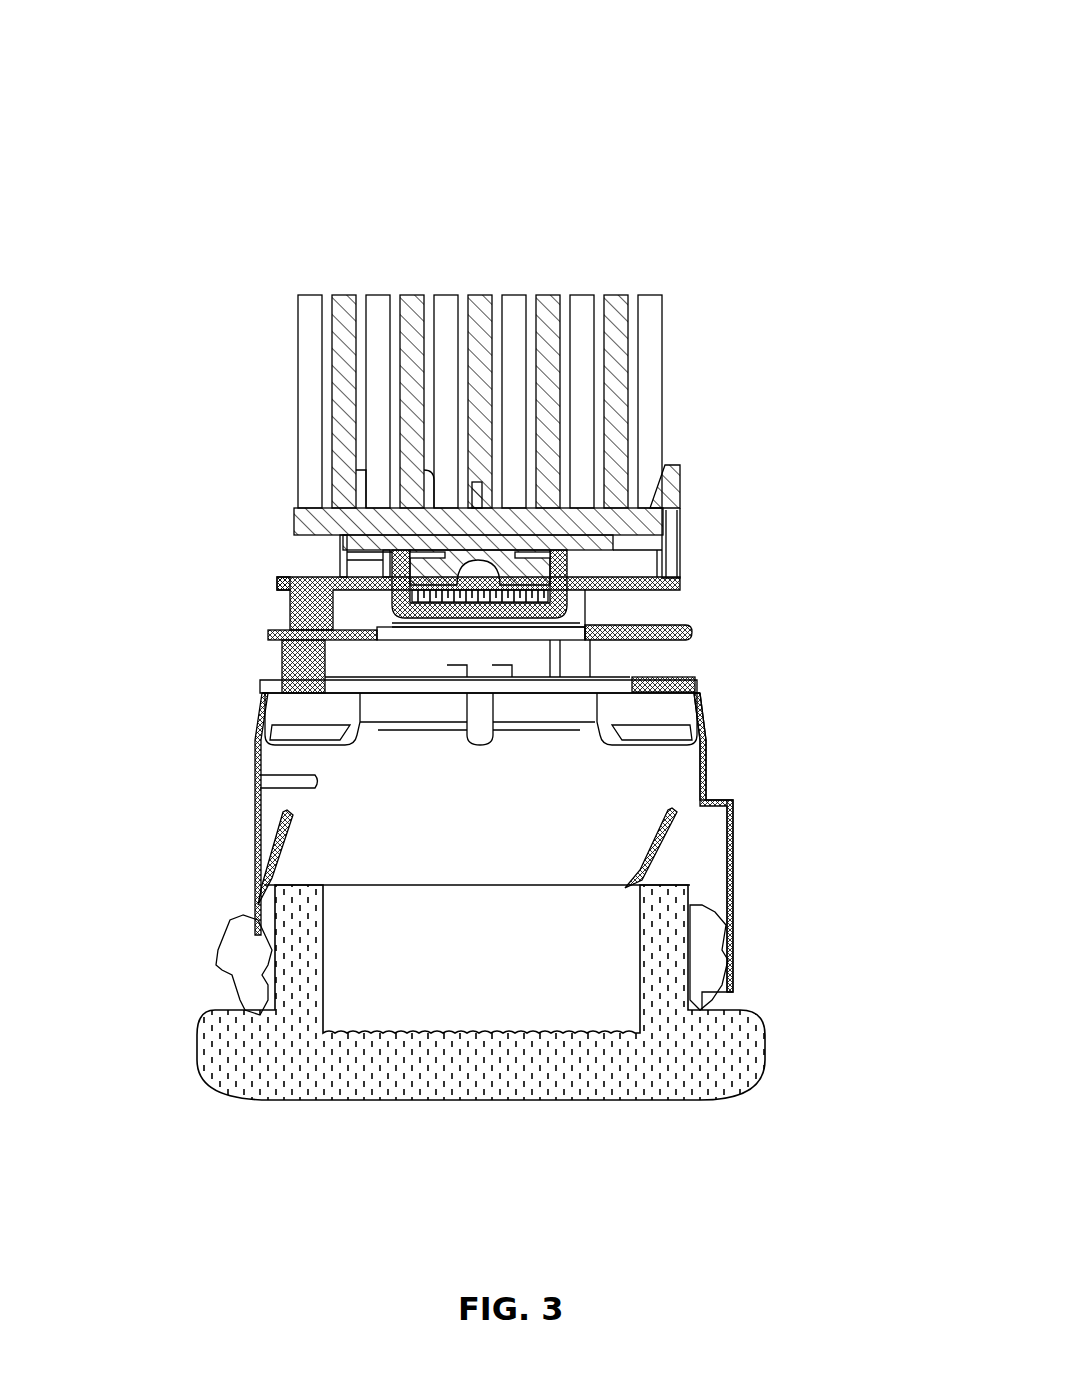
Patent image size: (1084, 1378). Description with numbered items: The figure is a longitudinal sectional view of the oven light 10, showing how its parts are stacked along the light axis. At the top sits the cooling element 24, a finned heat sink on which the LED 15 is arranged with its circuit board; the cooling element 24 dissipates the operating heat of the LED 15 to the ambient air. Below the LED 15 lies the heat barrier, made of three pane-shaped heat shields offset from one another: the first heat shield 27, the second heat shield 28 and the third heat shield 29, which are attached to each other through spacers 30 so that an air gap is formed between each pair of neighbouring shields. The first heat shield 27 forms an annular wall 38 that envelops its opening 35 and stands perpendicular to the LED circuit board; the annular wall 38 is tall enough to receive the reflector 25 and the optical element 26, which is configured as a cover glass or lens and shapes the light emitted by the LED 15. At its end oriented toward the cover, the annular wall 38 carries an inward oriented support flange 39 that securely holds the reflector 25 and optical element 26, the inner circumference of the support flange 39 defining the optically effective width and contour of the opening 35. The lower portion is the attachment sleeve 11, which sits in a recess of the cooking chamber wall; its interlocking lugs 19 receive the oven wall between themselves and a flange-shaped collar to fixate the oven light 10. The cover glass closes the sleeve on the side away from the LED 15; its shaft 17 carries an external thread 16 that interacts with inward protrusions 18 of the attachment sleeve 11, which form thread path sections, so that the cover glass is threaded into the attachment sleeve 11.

The oven light 10 is at (278, 170).
The cooling element 24 is at (593, 270).
The LED 15 is at (395, 540).
The annular wall 38 is at (322, 575).
The optical element 26 is at (383, 563).
The first heat shield 27 is at (680, 578).
The support flange 39 is at (283, 577).
The opening 35 is at (555, 520).
The reflector 25 is at (565, 603).
The second heat shield 28 is at (692, 633).
The spacers 30 is at (278, 607).
The third heat shield 29 is at (695, 682).
The attachment sleeve 11 is at (770, 929).
The interlocking lugs 19 is at (280, 845).
The external thread 16 is at (260, 957).
The protrusions 18 is at (712, 938).
The shaft 17 is at (340, 940).